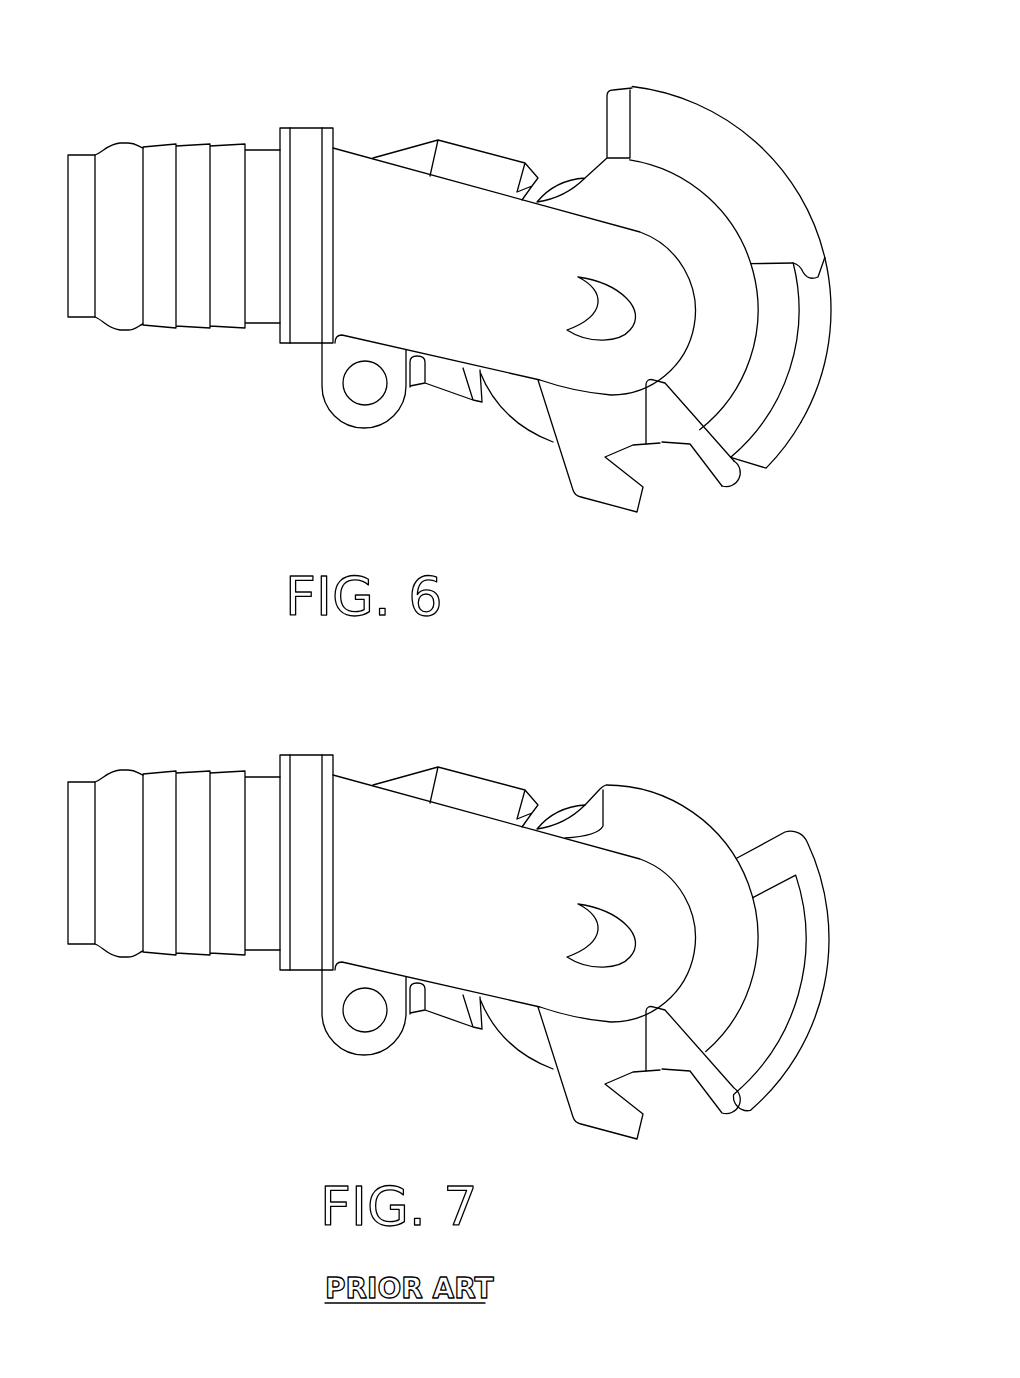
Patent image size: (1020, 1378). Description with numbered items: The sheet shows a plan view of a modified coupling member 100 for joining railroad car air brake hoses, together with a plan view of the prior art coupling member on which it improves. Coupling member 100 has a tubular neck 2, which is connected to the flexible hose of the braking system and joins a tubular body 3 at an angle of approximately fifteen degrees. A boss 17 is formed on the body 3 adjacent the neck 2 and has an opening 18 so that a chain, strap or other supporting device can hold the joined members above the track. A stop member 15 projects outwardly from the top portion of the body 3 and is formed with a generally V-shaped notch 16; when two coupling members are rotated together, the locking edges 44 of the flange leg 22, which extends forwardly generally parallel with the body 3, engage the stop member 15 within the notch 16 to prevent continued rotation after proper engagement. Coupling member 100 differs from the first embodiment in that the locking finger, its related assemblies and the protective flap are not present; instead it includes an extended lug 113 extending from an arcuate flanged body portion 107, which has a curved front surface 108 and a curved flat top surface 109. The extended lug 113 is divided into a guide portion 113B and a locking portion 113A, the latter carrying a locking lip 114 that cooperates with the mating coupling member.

The tubular neck 2 is at (188, 312).
The coupling member 100 is at (355, 143).
The tubular body 3 is at (441, 342).
The leg 22 is at (502, 170).
The opening 18 is at (348, 385).
The boss 17 is at (367, 410).
The locking edges 44 is at (480, 372).
The stop member 15 is at (585, 482).
The V-shaped notch 16 is at (632, 462).
The arcuate flanged body portion 107 is at (702, 396).
The curved front surface 108 is at (672, 160).
The curved flat top surface 109 is at (750, 314).
The guide portion 113B is at (748, 184).
The locking portion 113A is at (780, 362).
The extended lug 113 is at (812, 436).
The locking lip 114 is at (763, 457).